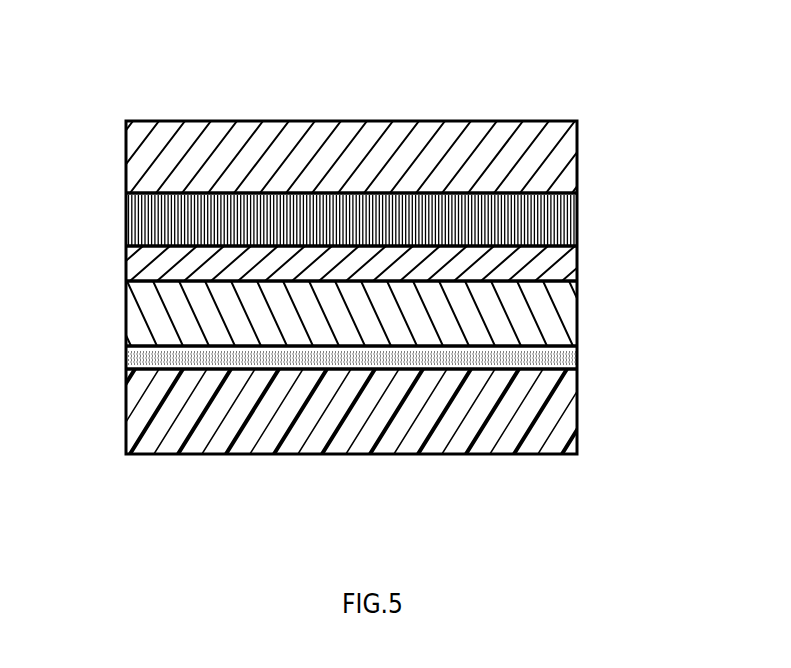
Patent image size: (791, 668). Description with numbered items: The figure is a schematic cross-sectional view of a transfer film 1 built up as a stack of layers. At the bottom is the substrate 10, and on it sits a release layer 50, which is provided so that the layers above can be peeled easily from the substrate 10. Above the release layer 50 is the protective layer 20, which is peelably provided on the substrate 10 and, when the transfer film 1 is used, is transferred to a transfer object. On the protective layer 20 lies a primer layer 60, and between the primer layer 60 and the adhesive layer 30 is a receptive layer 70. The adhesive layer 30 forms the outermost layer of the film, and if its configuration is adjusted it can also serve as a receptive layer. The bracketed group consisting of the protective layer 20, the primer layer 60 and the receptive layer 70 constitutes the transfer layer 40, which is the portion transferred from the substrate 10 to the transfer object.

The transfer film 1 is at (316, 106).
The substrate 10 is at (577, 412).
The protective layer 20 is at (577, 315).
The adhesive layer 30 is at (577, 152).
The transfer layer 40 is at (105, 180).
The release layer 50 is at (577, 352).
The primer layer 60 is at (577, 265).
The receptive layer 70 is at (577, 225).